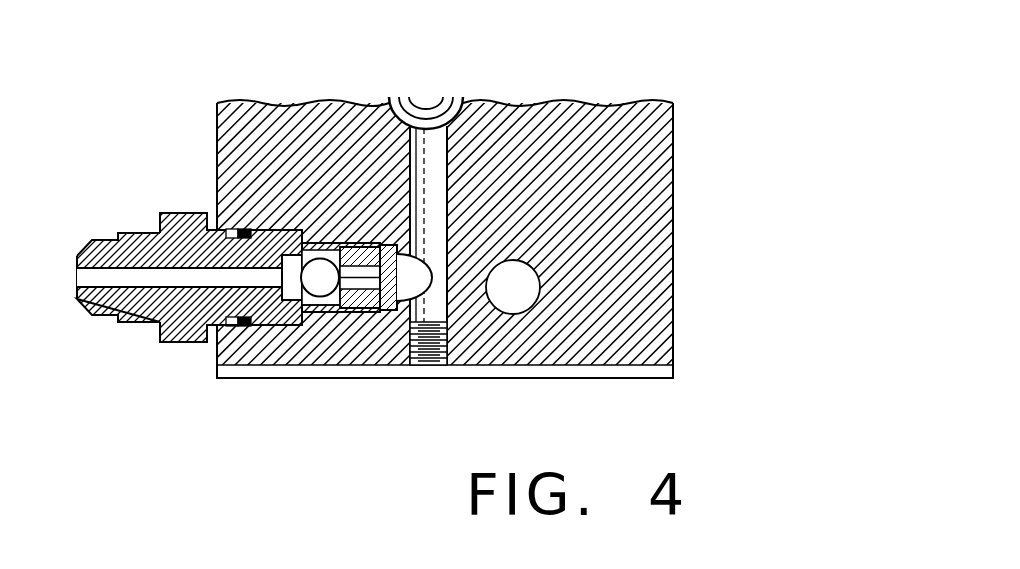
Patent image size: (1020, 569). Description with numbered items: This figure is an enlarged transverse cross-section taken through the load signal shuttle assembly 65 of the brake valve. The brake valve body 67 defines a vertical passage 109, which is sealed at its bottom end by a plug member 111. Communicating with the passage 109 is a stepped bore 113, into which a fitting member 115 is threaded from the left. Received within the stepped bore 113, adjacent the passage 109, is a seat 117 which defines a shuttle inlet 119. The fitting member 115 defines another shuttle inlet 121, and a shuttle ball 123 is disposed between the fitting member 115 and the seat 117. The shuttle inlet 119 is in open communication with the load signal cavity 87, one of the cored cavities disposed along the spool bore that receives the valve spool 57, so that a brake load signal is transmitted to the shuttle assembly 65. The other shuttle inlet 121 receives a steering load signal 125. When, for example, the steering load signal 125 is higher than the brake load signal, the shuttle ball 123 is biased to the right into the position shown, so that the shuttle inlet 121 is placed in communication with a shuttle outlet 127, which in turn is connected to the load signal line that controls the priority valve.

The valve spool 57 is at (430, 100).
The load signal shuttle assembly 65 is at (302, 340).
The body 67 is at (645, 158).
The load signal cavity 87 is at (455, 112).
The vertical passage 109 is at (433, 177).
The plug member 111 is at (441, 362).
The stepped bore 113 is at (268, 228).
The fitting member 115 is at (138, 330).
The seat 117 is at (345, 247).
The shuttle inlet 119 is at (372, 279).
The shuttle inlet 121 is at (150, 270).
The shuttle ball 123 is at (340, 307).
The steering load signal 125 is at (92, 278).
The shuttle outlet 127 is at (316, 243).